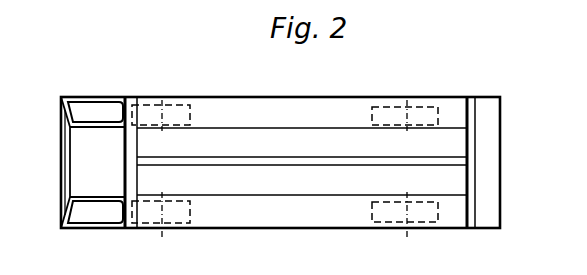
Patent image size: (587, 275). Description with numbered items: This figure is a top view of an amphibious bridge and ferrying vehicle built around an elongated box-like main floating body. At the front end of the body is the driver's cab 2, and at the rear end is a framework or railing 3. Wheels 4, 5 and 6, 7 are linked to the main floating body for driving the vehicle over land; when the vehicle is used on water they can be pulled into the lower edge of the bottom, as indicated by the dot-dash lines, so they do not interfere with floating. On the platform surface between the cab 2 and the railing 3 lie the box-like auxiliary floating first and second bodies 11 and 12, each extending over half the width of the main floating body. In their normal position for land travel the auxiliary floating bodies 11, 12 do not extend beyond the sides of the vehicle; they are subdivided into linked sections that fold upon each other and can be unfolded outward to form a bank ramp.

The driver's cab 2 is at (75, 155).
The framework or railing 3 is at (495, 162).
The wheel 4 is at (170, 222).
The wheel 5 is at (413, 218).
The wheel 6 is at (181, 103).
The wheel 7 is at (418, 110).
The auxiliary floating first body 11 is at (297, 233).
The auxiliary floating second body 12 is at (298, 97).